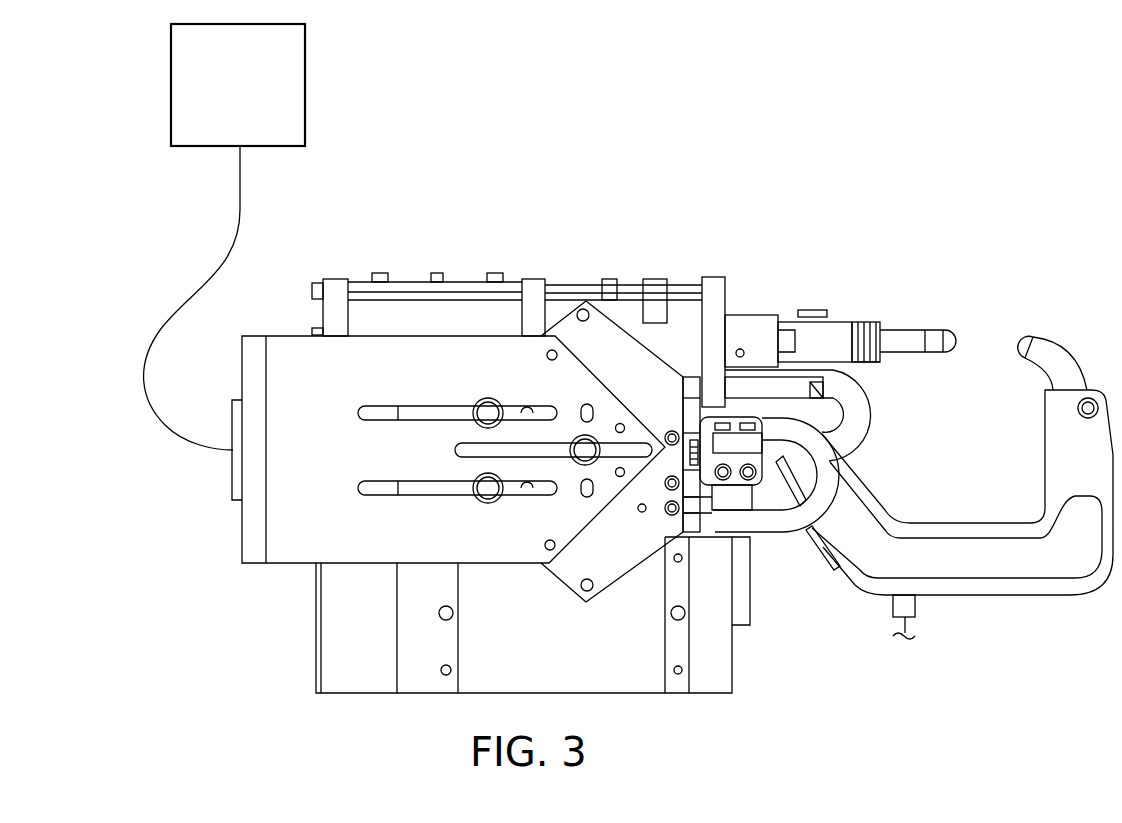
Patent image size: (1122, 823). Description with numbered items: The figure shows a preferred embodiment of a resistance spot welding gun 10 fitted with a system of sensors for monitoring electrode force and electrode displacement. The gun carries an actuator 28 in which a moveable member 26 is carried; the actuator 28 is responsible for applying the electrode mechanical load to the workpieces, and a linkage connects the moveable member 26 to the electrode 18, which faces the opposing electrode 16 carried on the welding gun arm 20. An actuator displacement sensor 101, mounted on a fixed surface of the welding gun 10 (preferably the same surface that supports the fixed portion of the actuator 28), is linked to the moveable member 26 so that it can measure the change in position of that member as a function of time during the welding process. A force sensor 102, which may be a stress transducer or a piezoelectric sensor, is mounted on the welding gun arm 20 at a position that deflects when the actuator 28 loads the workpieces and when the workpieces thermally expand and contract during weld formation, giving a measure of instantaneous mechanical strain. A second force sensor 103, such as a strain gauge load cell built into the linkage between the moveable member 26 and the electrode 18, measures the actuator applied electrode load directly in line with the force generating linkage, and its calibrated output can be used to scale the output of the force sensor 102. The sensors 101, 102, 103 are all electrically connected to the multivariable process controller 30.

The resistance spot welding gun 10 is at (108, 285).
The electrode 16 is at (1023, 335).
The electrode 18 is at (957, 328).
The welding gun arm 20 is at (1066, 634).
The moveable member 26 is at (872, 330).
The actuator 28 is at (837, 332).
The multivariable process controller 30 is at (238, 85).
The actuator displacement sensor 101 is at (810, 308).
The force sensor 102 is at (898, 607).
The second force sensor 103 is at (860, 364).